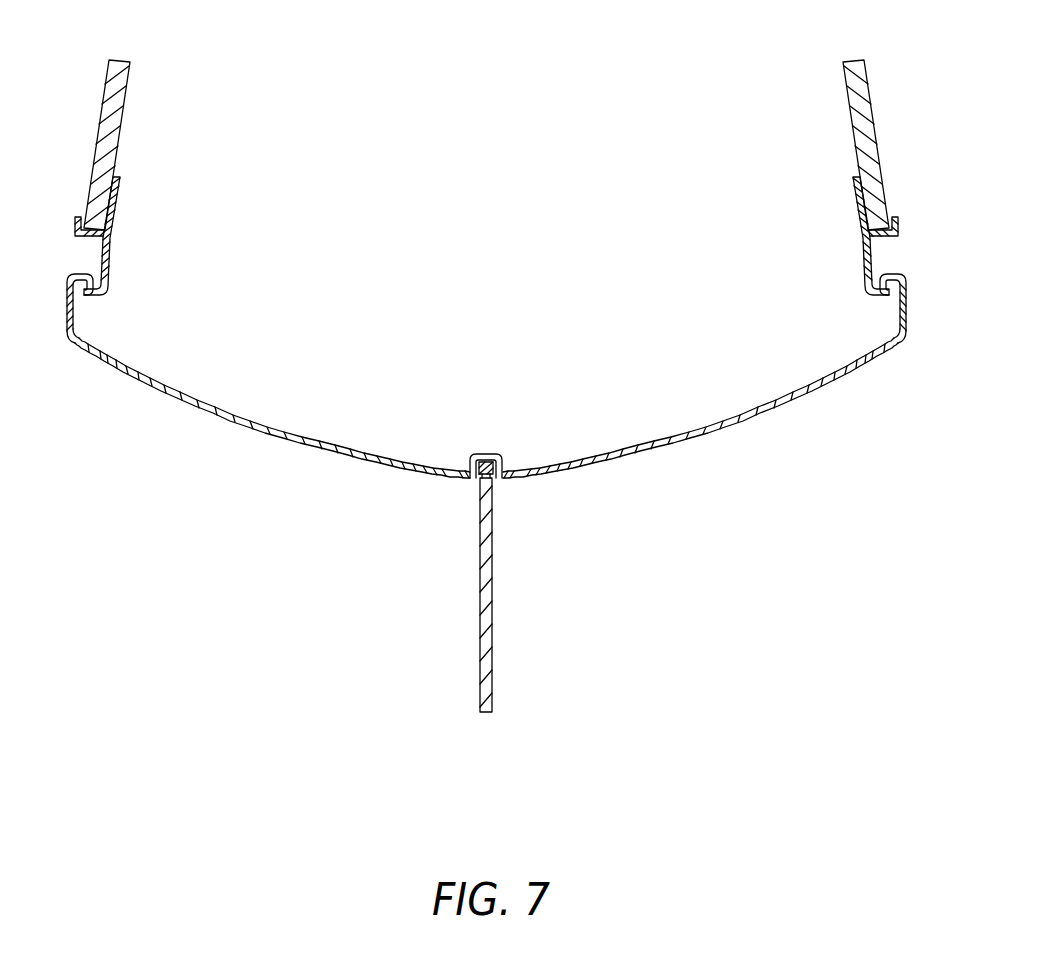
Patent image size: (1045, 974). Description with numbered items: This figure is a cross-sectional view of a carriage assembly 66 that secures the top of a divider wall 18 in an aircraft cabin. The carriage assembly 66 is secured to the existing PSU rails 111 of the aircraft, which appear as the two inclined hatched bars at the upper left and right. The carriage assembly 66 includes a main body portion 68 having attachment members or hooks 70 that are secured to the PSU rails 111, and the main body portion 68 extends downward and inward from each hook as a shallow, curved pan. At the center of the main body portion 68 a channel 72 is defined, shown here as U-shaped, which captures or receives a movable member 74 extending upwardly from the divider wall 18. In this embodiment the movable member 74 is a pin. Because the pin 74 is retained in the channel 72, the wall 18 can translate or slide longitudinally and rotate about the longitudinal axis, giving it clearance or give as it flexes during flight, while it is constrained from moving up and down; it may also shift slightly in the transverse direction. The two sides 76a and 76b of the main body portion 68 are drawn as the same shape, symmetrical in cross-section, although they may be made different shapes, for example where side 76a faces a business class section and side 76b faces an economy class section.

The divider wall 18 is at (483, 654).
The carriage assembly 66 is at (488, 386).
The main body portion 68 is at (486, 453).
The hooks 70 is at (87, 276).
The channel 72 is at (486, 456).
The movable member 74 is at (495, 481).
The side of main body portion 76a is at (323, 455).
The side of main body portion 76b is at (647, 454).
The PSU rails 111 is at (108, 258).